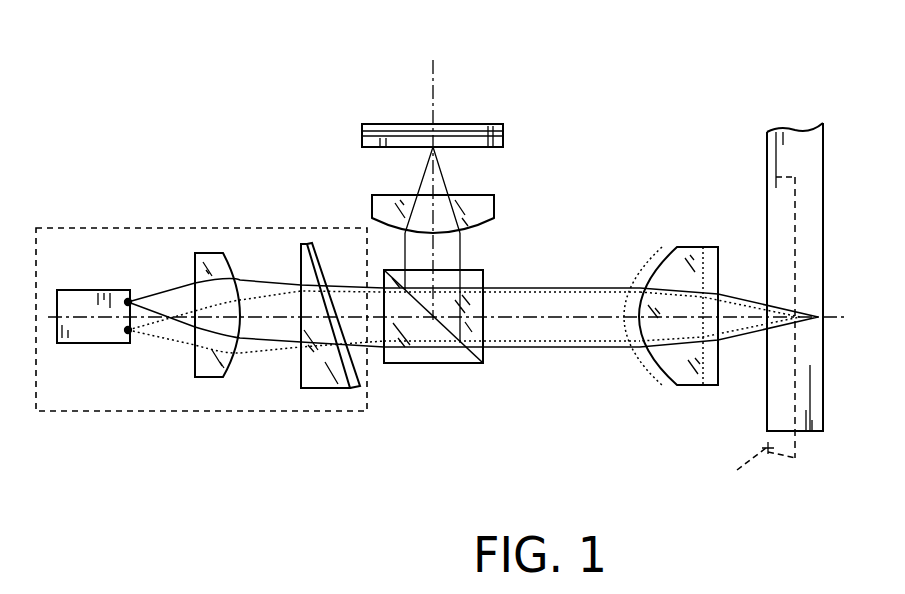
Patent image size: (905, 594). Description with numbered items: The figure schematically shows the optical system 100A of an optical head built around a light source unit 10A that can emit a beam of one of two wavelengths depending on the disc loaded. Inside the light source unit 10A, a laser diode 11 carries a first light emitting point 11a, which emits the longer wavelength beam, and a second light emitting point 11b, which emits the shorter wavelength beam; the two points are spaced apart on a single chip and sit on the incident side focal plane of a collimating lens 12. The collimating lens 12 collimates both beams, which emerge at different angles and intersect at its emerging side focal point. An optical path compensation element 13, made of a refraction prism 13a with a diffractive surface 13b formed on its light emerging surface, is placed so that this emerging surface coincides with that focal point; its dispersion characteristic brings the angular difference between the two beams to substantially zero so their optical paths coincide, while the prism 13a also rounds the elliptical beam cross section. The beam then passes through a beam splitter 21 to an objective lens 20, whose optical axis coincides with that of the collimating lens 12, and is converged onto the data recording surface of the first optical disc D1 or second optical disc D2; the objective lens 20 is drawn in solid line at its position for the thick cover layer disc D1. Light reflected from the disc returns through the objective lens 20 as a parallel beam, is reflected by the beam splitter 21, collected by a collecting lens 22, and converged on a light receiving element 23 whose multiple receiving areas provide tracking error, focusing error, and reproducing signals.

The optical system 100A is at (453, 270).
The light source unit 10A is at (227, 339).
The laser diode 11 is at (111, 348).
The first light emitting point 11a is at (127, 300).
The second light emitting point 11b is at (128, 333).
The collimating lens 12 is at (215, 378).
The optical path compensation element 13 is at (357, 375).
The refraction prism 13a is at (315, 390).
The diffractive surface 13b is at (368, 388).
The objective lens 20 is at (672, 374).
The beam splitter 21 is at (447, 363).
The collecting lens 22 is at (492, 208).
The light receiving element 23 is at (503, 138).
The first optical disc D1 is at (823, 258).
The second optical disc D2 is at (746, 465).